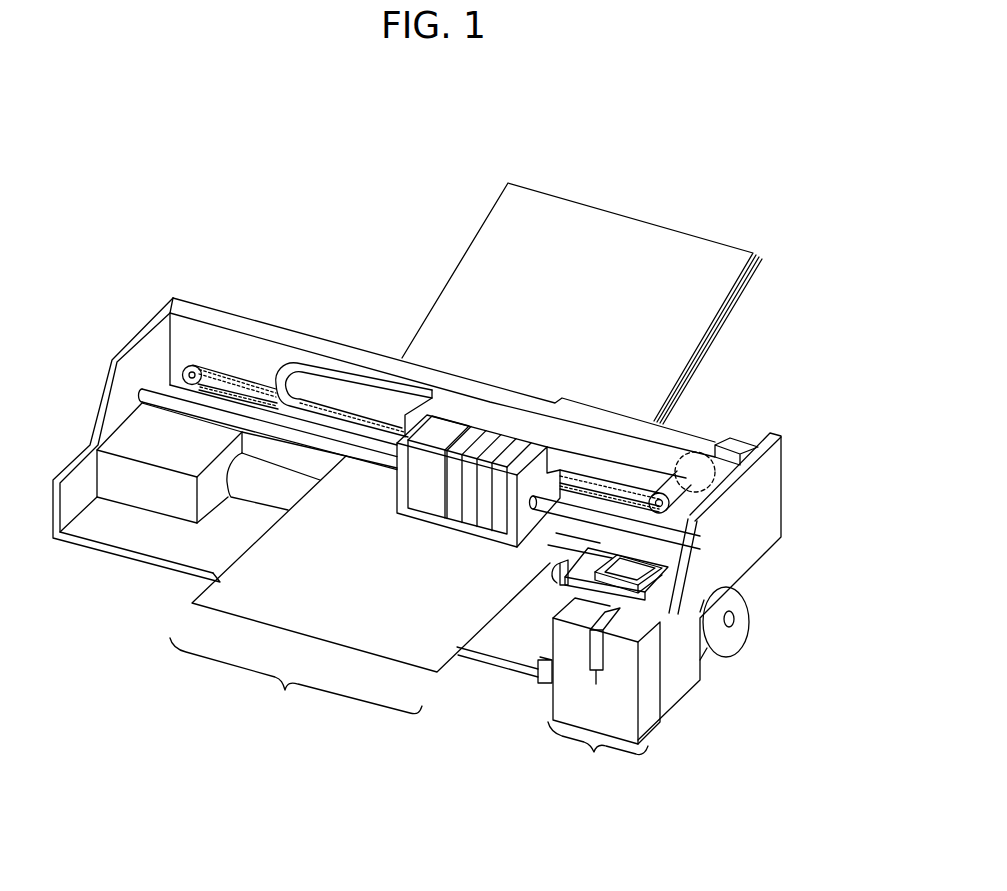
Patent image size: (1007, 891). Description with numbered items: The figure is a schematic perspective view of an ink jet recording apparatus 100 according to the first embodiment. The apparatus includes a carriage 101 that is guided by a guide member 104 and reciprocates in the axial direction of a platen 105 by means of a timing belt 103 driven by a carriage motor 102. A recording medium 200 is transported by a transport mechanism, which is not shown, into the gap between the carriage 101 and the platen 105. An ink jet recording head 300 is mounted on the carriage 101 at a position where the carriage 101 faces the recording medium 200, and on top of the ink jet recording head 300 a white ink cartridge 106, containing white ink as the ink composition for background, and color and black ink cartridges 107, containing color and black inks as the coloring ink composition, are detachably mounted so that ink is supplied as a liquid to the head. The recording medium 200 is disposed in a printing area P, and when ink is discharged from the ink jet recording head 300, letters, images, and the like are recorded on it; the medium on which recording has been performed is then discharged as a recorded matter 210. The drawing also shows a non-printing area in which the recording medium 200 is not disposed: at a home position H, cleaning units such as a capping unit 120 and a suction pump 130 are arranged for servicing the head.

The ink jet recording apparatus 100 is at (786, 174).
The carriage 101 is at (478, 454).
The carriage motor 102 is at (704, 452).
The timing belt 103 is at (214, 360).
The guide member 104 is at (147, 382).
The platen 105 is at (256, 485).
The white ink cartridge 106 is at (450, 432).
The color and black ink cartridges 107 is at (493, 440).
The capping unit 120 is at (643, 585).
The suction pump 130 is at (620, 607).
The recording medium 200 is at (729, 258).
The recorded matter 210 is at (307, 615).
The ink jet recording head 300 is at (426, 532).
The printing area P is at (296, 676).
The home position H is at (604, 686).